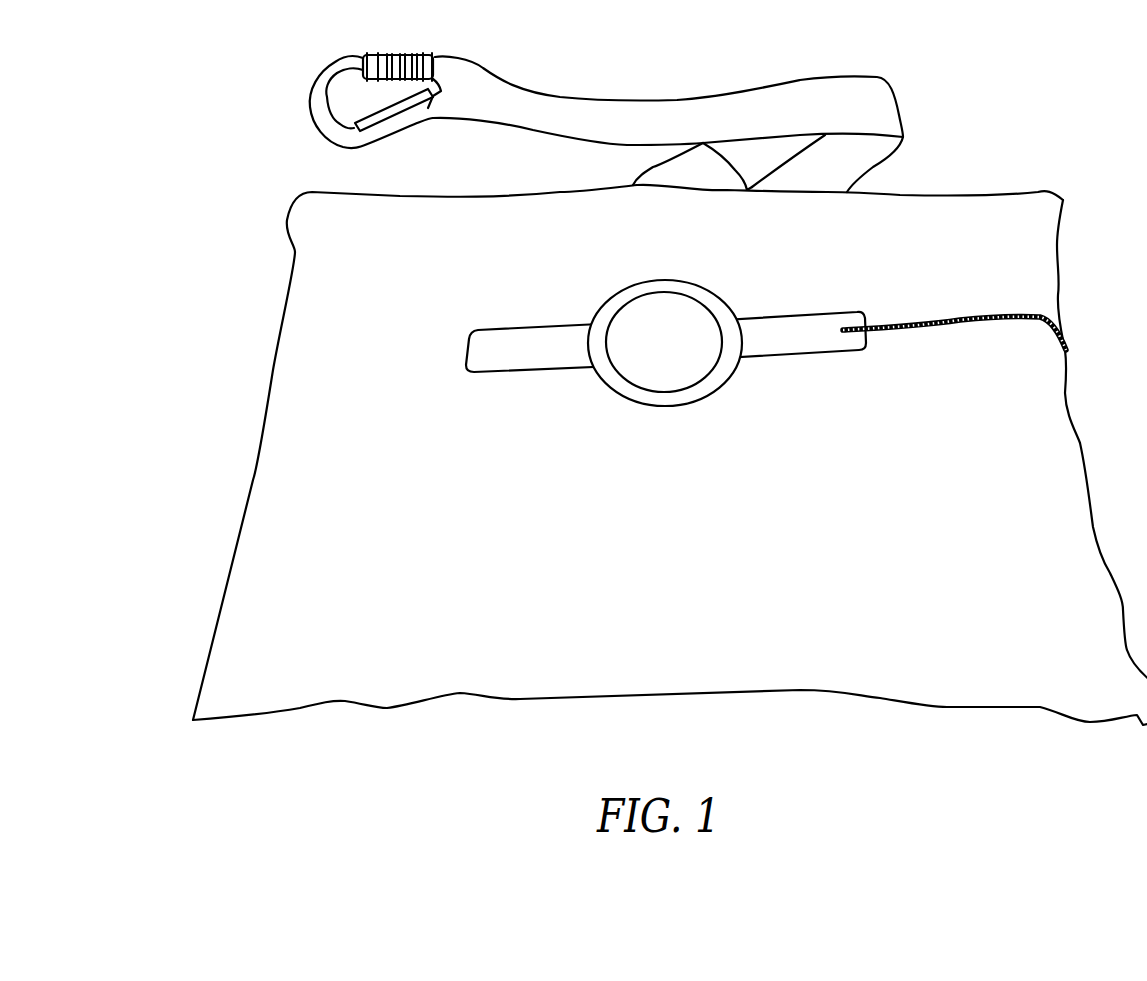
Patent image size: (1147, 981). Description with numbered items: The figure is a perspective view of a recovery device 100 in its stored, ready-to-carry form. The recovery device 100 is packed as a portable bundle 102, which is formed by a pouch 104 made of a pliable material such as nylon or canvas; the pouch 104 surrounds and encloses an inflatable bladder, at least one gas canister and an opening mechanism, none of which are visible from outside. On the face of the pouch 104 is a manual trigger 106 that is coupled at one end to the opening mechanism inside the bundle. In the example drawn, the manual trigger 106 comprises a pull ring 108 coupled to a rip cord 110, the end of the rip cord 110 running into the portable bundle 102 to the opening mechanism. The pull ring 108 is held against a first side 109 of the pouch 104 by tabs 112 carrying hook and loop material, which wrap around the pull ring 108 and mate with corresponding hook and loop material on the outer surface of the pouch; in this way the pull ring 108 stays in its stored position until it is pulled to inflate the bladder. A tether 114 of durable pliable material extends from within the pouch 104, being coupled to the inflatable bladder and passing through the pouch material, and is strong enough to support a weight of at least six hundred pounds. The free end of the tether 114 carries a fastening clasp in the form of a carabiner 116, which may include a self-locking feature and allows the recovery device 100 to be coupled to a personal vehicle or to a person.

The recovery device 100 is at (1072, 93).
The portable bundle 102 is at (248, 530).
The pouch 104 is at (1050, 263).
The manual trigger 106 is at (947, 308).
The pull ring 108 is at (660, 402).
The first side 109 is at (801, 684).
The rip cord 110 is at (917, 328).
The tabs 112 is at (502, 335).
The tether 114 is at (638, 108).
The carabiner 116 is at (413, 52).